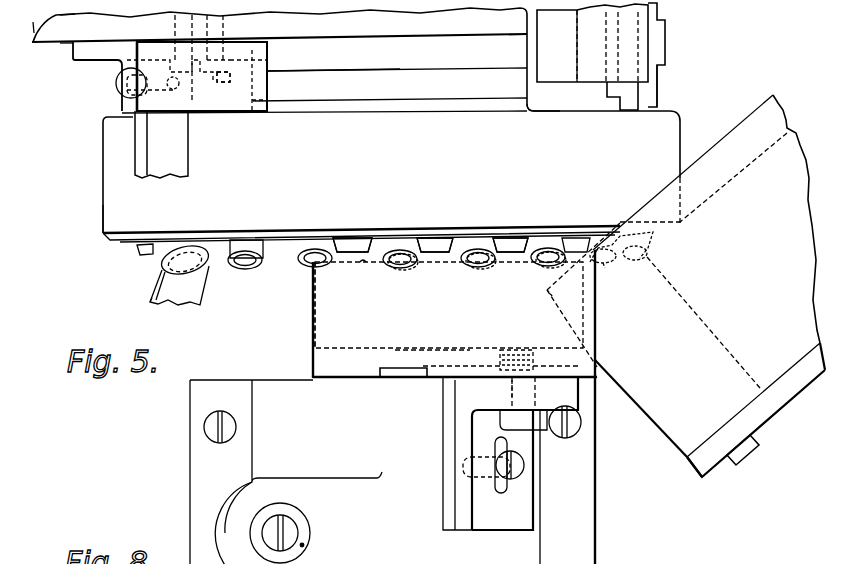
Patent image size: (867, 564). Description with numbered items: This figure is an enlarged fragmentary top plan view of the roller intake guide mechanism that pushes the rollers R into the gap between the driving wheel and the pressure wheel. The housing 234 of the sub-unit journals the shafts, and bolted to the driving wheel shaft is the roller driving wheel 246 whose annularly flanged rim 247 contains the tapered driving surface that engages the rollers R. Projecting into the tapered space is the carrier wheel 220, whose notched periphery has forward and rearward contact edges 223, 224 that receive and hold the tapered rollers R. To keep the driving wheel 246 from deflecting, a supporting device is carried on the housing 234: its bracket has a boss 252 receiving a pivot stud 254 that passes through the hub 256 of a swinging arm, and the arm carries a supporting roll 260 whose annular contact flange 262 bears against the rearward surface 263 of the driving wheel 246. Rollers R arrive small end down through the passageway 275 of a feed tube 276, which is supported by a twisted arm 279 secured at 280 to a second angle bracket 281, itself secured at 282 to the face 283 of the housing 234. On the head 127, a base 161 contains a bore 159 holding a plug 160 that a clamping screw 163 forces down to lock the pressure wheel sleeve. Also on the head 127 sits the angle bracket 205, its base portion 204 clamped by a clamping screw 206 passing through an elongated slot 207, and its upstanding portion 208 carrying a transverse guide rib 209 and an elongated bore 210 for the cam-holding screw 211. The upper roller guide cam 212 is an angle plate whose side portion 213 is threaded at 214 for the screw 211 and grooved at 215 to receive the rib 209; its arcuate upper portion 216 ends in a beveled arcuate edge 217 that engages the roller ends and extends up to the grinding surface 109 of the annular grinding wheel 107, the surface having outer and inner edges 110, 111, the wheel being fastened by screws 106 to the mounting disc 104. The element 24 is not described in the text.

The carriage base 24 is at (106, 238).
The mounting disc 104 is at (698, 462).
The screws 106 is at (746, 458).
The annular grinding wheel 107 is at (735, 118).
The annular grinding surface 109 is at (606, 270).
The outer edge 110 is at (547, 290).
The inner edge 111 is at (650, 258).
The head 127 is at (252, 463).
The bore 159 is at (300, 512).
The plug 160 is at (302, 545).
The base 161 is at (235, 523).
The clamping screw 163 is at (290, 530).
The base portion 204 is at (483, 522).
The angle bracket 205 is at (462, 408).
The clamping screw 206 is at (520, 466).
The elongated slot 207 is at (495, 485).
The upstanding portion 208 is at (565, 395).
The transverse guide rib 209 is at (498, 370).
The bore 210 is at (512, 380).
The cam-holding screw 211 is at (540, 428).
The upper roller guide cam 212 is at (311, 340).
The side portion 213 is at (396, 350).
The threaded bore 214 is at (507, 352).
The elongated groove 215 is at (398, 378).
The upper portion 216 is at (316, 310).
The beveled arcuate edge 217 is at (505, 240).
The carrier wheel 220 is at (440, 248).
The forward contact edge 223 is at (365, 265).
The rearward contact edge 224 is at (347, 262).
The housing 234 is at (67, 31).
The roller driving wheel 246 is at (103, 162).
The annularly flanged rim 247 is at (103, 213).
The boss 252 is at (557, 72).
The pivot stud 254 is at (658, 40).
The hub 256 is at (597, 72).
The supporting roll 260 is at (664, 78).
The annular contact flange 262 is at (638, 100).
The rearward surface 263 is at (569, 105).
The passageway 275 is at (152, 296).
The feed tube 276 is at (150, 276).
The twisted arm 279 is at (180, 145).
The securing point 280 is at (122, 87).
The second angle bracket 281 is at (267, 60).
The securing point 282 is at (214, 76).
The face 283 is at (60, 43).
The rollers R is at (318, 243).